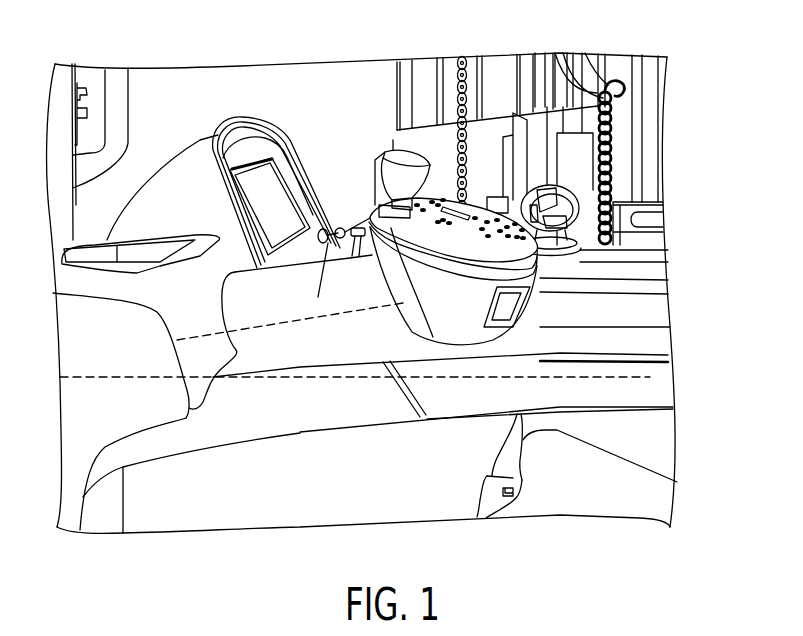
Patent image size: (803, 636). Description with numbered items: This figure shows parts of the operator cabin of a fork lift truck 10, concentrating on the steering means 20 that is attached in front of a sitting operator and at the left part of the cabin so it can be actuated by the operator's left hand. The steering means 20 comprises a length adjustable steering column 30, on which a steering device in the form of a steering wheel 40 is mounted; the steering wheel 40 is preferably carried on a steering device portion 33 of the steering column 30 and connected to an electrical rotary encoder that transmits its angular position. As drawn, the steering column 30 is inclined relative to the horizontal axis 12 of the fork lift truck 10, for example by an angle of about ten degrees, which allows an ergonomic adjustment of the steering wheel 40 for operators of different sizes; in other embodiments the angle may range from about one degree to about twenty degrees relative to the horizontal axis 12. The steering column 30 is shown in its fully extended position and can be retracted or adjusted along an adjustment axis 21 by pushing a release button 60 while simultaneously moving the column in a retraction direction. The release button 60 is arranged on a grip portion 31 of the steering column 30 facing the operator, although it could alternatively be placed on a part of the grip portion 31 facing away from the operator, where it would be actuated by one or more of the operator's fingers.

The fork lift truck 10 is at (680, 222).
The horizontal axis 12 is at (652, 377).
The steering means 20 is at (385, 138).
The adjustment axis 21 is at (238, 322).
The steering column 30 is at (340, 227).
The grip portion 31 is at (460, 333).
The steering device portion 33 is at (443, 260).
The steering wheel 40 is at (436, 216).
The release button 60 is at (507, 310).